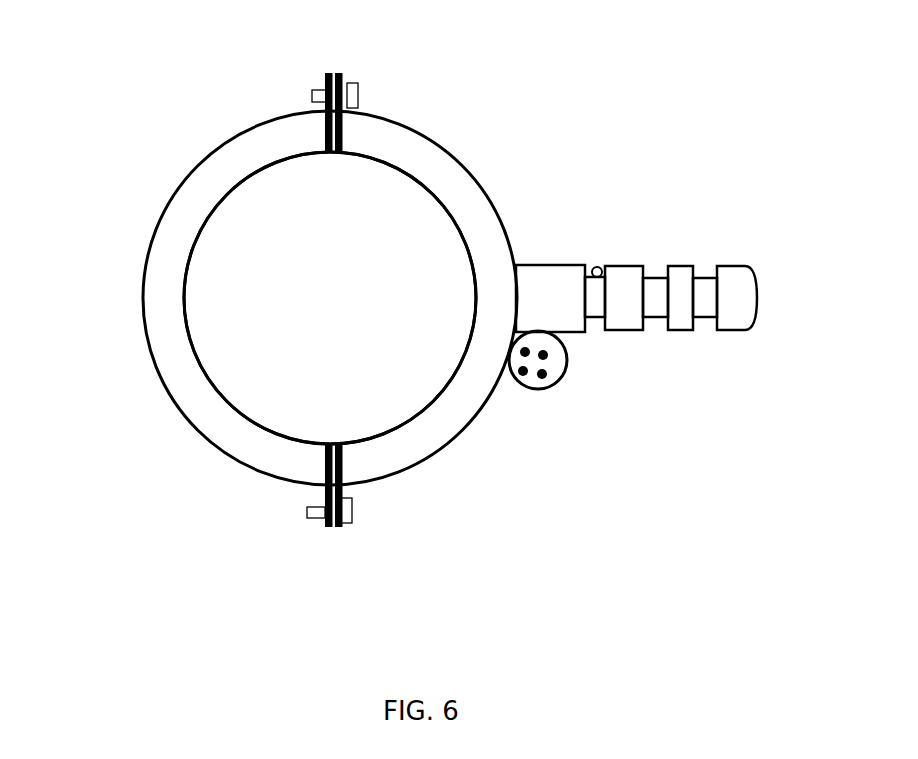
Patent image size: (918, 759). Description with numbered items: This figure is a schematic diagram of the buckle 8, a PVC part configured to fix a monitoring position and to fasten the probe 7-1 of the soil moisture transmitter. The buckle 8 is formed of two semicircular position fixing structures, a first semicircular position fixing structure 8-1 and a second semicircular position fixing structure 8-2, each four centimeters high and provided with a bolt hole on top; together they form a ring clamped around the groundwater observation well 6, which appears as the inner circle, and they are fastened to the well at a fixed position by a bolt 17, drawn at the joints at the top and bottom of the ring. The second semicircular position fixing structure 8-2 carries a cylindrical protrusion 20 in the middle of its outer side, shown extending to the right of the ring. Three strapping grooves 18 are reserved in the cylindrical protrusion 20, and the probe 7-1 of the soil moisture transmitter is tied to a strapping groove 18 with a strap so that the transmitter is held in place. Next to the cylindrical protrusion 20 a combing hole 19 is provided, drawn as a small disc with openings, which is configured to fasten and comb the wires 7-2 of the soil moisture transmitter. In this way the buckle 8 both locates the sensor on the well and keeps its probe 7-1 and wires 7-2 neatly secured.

The groundwater observation well 6 is at (218, 202).
The buckle 8 is at (328, 270).
The first semicircular position fixing structure 8-1 is at (150, 250).
The second semicircular position fixing structure 8-2 is at (473, 172).
The bolt 17 is at (357, 85).
The probe 7-1 is at (600, 266).
The wire 7-2 is at (525, 375).
The strapping groove 18 is at (658, 260).
The combing hole 19 is at (568, 368).
The cylindrical protrusion 20 is at (760, 315).